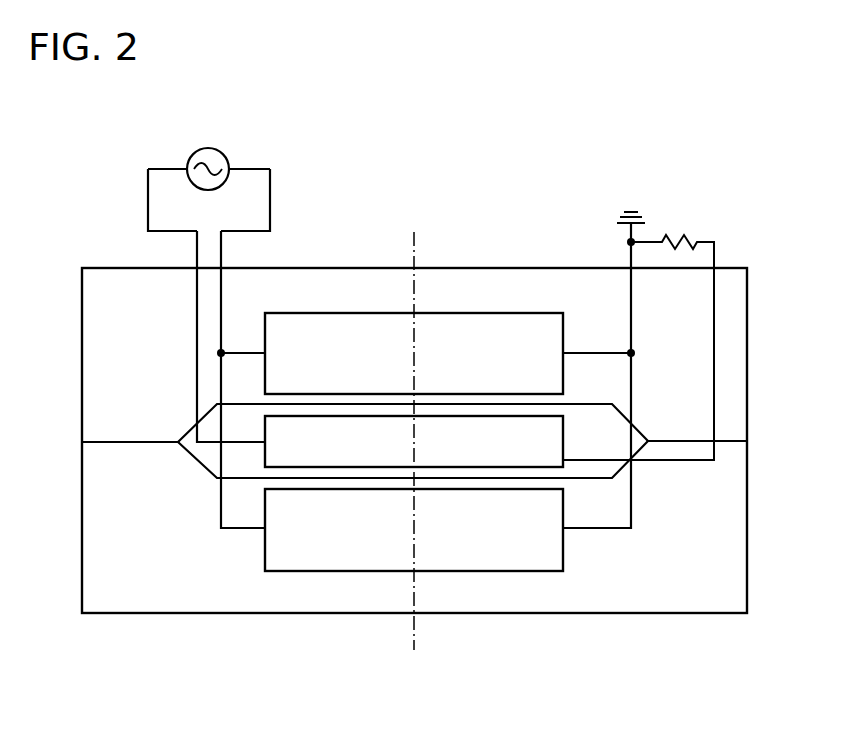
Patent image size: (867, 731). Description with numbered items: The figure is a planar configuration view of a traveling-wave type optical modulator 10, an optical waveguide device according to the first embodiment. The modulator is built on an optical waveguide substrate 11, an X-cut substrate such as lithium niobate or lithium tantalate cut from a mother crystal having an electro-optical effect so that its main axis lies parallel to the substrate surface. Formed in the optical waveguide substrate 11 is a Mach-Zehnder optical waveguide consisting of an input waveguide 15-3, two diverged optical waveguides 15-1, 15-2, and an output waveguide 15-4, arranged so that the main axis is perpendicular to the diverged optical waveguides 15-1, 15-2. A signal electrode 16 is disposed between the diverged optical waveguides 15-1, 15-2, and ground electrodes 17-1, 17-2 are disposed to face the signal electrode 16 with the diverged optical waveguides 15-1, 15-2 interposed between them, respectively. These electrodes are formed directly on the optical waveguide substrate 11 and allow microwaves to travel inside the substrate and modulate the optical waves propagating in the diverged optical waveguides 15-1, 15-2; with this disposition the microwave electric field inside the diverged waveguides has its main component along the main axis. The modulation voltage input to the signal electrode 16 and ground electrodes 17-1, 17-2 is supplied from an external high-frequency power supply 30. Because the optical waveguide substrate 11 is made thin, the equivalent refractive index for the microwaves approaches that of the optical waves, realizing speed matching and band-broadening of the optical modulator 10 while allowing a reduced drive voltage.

The traveling-wave type optical modulator 10 is at (489, 190).
The optical waveguide substrate 11 is at (747, 352).
The diverged optical waveguide 15-1 is at (592, 403).
The diverged optical waveguide 15-2 is at (592, 478).
The input waveguide 15-3 is at (117, 441).
The output waveguide 15-4 is at (665, 440).
The signal electrode 16 is at (278, 453).
The ground electrode 17-1 is at (343, 332).
The ground electrode 17-2 is at (508, 551).
The external high-frequency power supply 30 is at (208, 148).